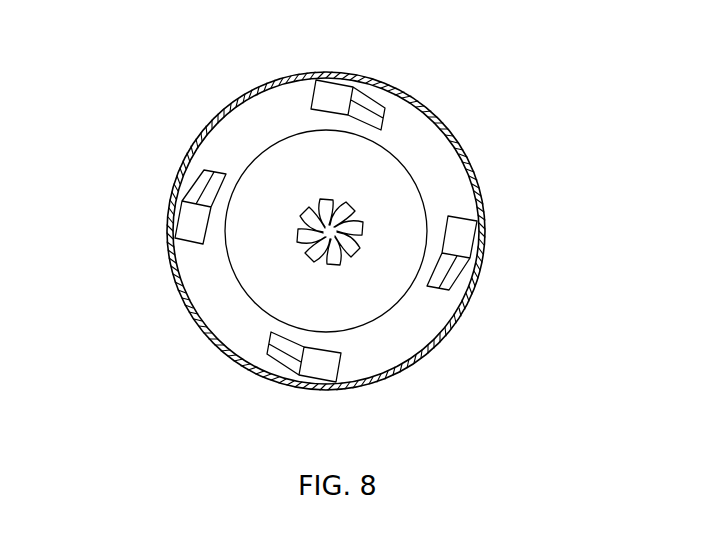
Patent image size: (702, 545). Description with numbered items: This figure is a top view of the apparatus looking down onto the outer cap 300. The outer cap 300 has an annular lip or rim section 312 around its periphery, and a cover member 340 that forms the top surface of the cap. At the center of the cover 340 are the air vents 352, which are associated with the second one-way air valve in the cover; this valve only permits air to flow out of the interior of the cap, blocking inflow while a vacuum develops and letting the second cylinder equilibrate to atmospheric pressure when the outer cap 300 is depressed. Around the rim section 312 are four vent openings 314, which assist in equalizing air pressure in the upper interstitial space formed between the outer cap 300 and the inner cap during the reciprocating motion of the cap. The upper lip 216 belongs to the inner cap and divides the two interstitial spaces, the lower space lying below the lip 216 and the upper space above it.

The outer cap 300 is at (427, 357).
The annular lip section 312 is at (413, 140).
The cover member 340 is at (405, 218).
The air vents 352 is at (302, 212).
The upper lip 216 is at (330, 100).
The vent openings 314 is at (198, 170).